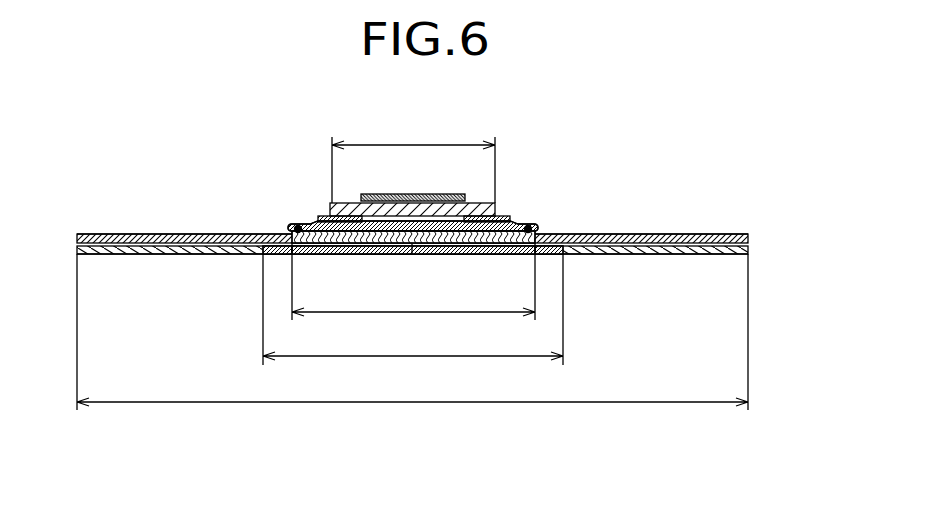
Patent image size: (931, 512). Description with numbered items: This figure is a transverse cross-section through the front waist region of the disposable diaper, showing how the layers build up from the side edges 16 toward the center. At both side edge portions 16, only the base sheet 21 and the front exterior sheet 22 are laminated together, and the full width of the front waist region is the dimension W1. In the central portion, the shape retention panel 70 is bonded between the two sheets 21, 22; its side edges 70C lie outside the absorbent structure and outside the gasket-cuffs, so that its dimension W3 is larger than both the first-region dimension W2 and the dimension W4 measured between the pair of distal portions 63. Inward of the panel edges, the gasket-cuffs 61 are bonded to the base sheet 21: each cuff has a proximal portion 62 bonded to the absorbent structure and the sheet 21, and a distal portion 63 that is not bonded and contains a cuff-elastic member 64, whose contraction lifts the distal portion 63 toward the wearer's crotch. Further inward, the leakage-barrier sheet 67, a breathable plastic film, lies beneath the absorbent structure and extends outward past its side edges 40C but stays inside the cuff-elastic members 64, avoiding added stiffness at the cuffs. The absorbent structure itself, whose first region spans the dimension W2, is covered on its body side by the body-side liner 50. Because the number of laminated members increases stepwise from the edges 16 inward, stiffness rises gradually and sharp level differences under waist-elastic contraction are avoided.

The side edges 16 is at (77, 238).
The base sheet 21 is at (717, 234).
The front exterior sheet 22 is at (700, 254).
The side edges of absorbent structure 40C is at (333, 217).
The body-side liner 50 is at (415, 195).
The gasket-cuffs 61 is at (413, 196).
The proximal portions 62 is at (505, 222).
The distal portions 63 is at (518, 225).
The cuff-elastic members 64 is at (295, 229).
The leakage-barrier sheet 67 is at (412, 248).
The shape retention panel 70 is at (453, 244).
The side edges of shape retention panel 70C is at (258, 247).
The dimension of front waist region W1 is at (433, 402).
The dimension of first region W2 is at (411, 145).
The dimension of shape retention panel W3 is at (408, 356).
The dimension between distal portions W4 is at (413, 312).